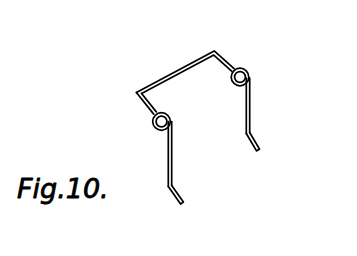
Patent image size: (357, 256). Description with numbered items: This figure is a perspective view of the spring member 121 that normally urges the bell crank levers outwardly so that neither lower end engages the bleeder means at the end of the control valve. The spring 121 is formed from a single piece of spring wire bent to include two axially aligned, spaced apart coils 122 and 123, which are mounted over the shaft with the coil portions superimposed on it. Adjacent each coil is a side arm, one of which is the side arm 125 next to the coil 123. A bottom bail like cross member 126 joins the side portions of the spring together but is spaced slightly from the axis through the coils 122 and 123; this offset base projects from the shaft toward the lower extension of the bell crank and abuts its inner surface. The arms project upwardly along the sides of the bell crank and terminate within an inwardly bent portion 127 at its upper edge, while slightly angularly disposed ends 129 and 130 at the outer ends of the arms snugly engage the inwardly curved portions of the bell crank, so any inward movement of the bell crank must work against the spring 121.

The spring member 121 is at (257, 134).
The coil 122 is at (158, 119).
The coil 123 is at (249, 69).
The side arm 125 is at (251, 100).
The bail like cross member 126 is at (171, 66).
The inwardly bent portion 127 is at (167, 166).
The angularly disposed end 129 is at (184, 199).
The angularly disposed end 130 is at (250, 150).